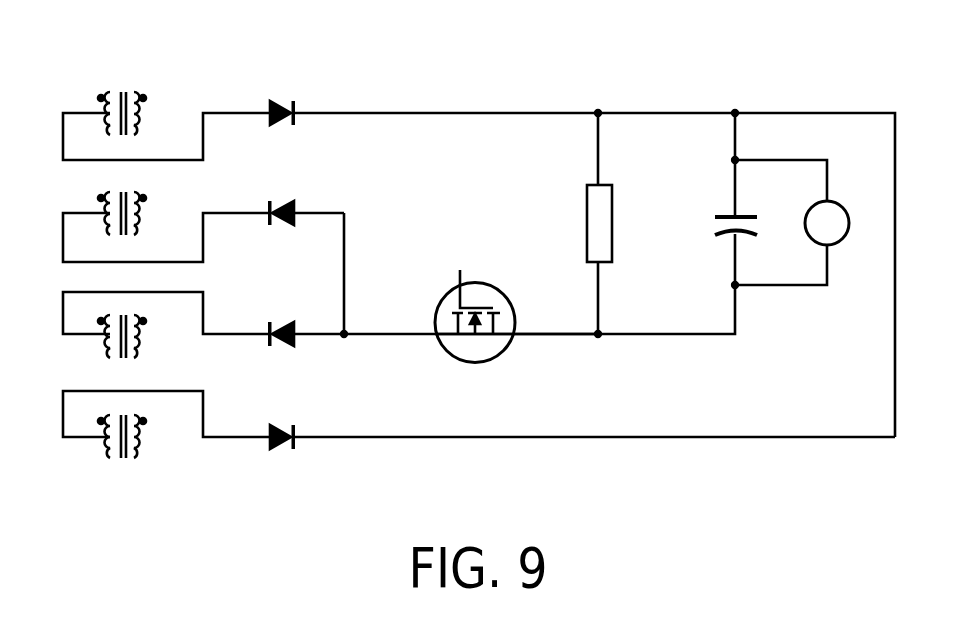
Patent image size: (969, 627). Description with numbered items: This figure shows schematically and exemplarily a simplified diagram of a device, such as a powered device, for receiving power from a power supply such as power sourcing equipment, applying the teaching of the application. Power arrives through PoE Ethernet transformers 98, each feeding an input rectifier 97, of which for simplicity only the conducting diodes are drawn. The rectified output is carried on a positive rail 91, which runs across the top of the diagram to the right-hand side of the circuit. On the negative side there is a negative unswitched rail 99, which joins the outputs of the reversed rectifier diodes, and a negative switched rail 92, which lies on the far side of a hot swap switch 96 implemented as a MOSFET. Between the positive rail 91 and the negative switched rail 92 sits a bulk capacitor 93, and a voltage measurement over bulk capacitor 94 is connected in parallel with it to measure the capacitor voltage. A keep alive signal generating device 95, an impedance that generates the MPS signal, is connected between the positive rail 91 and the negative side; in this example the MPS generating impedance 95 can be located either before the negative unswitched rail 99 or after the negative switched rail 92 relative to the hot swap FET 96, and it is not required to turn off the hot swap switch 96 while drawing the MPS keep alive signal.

The positive rail 91 is at (844, 110).
The negative switched rail 92 is at (718, 340).
The bulk capacitor 93 is at (722, 213).
The voltage measurement over bulk capacitor 94 is at (845, 207).
The keep alive signal generating device 95 is at (612, 218).
The hot swap switch 96 is at (480, 283).
The input rectifier 97 is at (283, 97).
The PoE Ethernet transformers 98 is at (120, 88).
The negative unswitched rail 99 is at (346, 340).